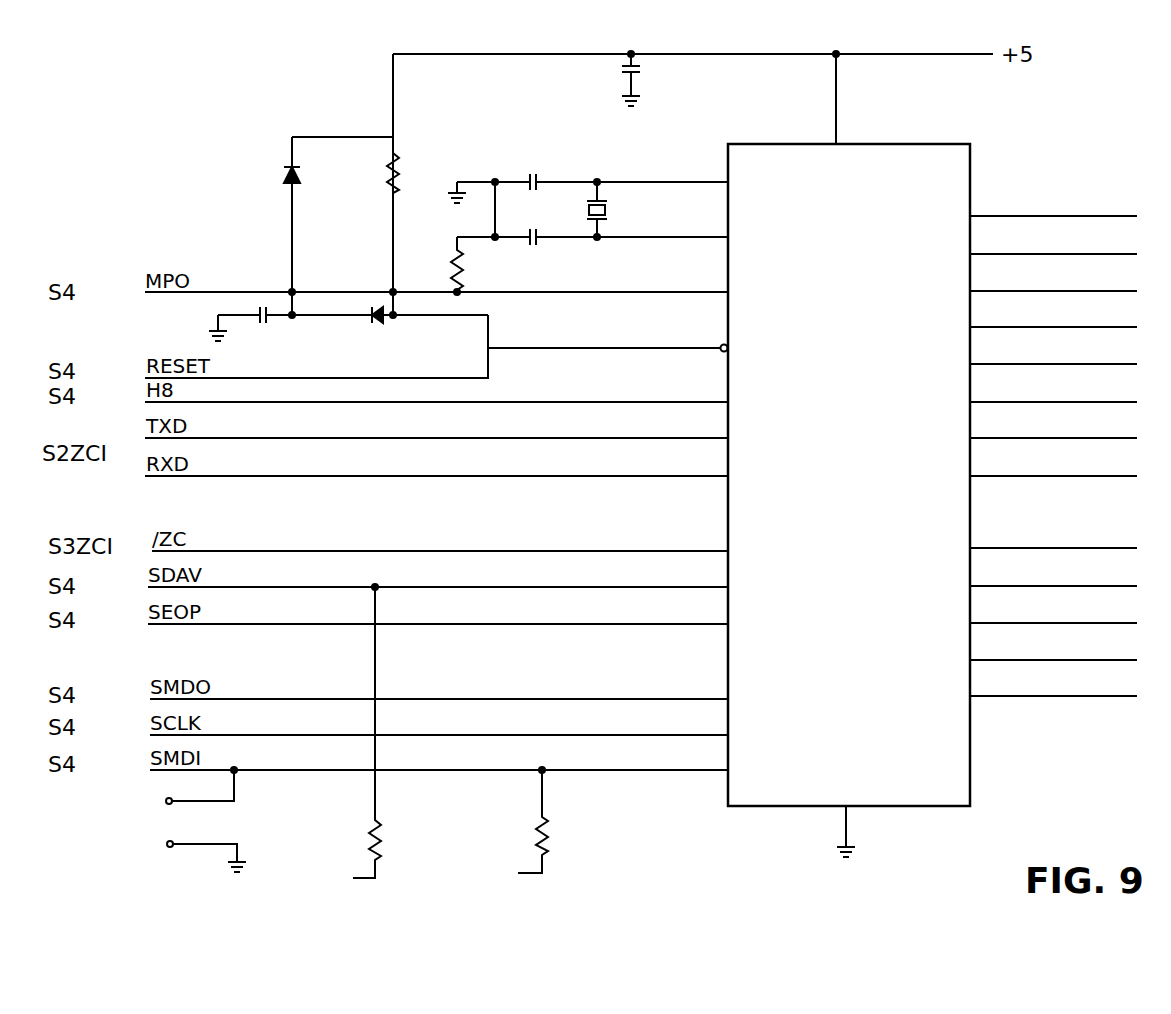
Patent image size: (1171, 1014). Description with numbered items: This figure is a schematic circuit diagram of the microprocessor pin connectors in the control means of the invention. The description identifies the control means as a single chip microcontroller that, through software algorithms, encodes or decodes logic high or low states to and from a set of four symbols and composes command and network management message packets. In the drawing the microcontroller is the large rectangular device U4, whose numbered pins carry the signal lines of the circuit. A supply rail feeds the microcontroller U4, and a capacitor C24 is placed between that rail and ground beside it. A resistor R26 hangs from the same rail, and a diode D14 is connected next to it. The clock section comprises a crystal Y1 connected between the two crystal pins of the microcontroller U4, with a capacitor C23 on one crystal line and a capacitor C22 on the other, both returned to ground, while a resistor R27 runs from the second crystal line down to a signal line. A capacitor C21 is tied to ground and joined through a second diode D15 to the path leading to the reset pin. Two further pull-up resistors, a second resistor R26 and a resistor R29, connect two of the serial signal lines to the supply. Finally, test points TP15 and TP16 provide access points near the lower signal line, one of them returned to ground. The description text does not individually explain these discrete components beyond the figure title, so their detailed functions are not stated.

The microcontroller U4 is at (930, 455).
The capacitor C24 is at (657, 80).
The resistor R26 is at (378, 519).
The diode D14 is at (338, 227).
The capacitor C23 is at (588, 175).
The capacitor C22 is at (592, 213).
The crystal Y1 is at (617, 209).
The resistor R27 is at (434, 266).
The capacitor C21 is at (234, 317).
The diode D15 is at (390, 306).
The resistor R29 is at (536, 826).
The test point TP15 is at (201, 803).
The test point TP16 is at (202, 863).